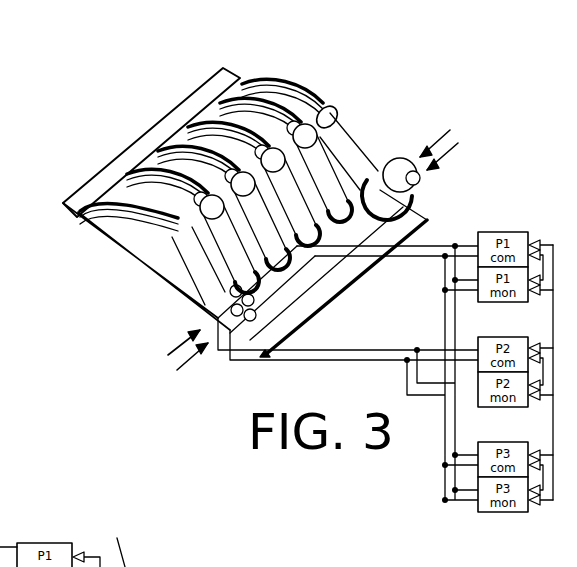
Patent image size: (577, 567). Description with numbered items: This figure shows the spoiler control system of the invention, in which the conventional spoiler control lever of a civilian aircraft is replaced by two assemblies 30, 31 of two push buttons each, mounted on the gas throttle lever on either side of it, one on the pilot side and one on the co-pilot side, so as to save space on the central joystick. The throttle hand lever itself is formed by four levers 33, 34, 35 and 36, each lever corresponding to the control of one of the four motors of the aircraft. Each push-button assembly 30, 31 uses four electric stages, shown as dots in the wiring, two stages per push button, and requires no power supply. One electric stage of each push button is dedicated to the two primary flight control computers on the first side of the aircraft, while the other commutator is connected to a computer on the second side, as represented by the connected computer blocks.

The assembly of two push buttons 30 is at (217, 290).
The assembly of two push buttons 31 is at (408, 152).
The lever 33 is at (209, 213).
The lever 34 is at (183, 128).
The lever 35 is at (283, 140).
The lever 36 is at (325, 117).